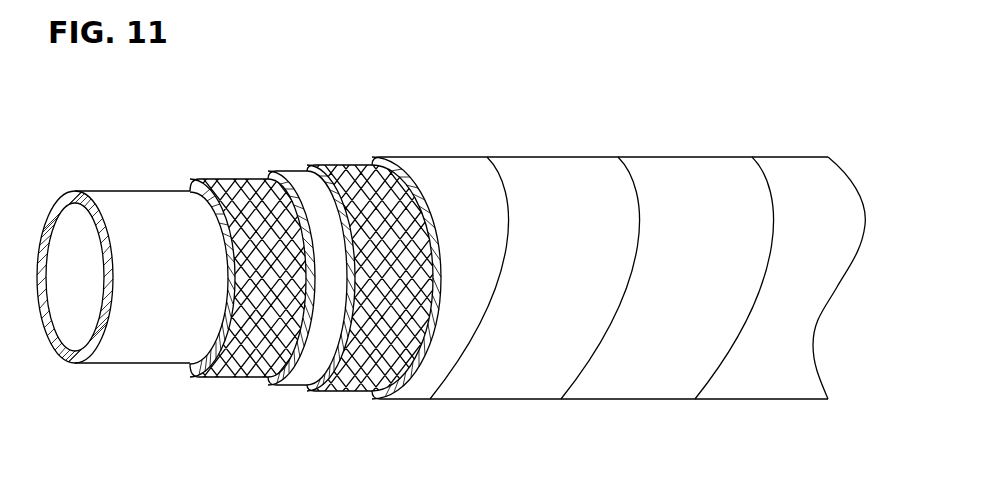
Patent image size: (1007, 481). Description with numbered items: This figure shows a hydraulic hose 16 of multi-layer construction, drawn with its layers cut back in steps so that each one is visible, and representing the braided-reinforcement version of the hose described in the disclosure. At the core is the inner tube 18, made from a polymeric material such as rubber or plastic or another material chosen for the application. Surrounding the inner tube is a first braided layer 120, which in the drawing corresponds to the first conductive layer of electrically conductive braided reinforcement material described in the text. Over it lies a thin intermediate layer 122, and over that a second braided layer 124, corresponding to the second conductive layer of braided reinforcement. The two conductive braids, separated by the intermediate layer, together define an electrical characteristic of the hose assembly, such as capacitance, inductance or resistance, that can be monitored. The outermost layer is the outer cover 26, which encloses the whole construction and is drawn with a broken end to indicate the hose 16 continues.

The hose 16 is at (710, 399).
The inner tube 18 is at (137, 190).
The outer cover 26 is at (555, 157).
The first braid reinforcement layer 120 is at (233, 180).
The intermediate layer 122 is at (293, 166).
The second braid reinforcement layer 124 is at (342, 388).